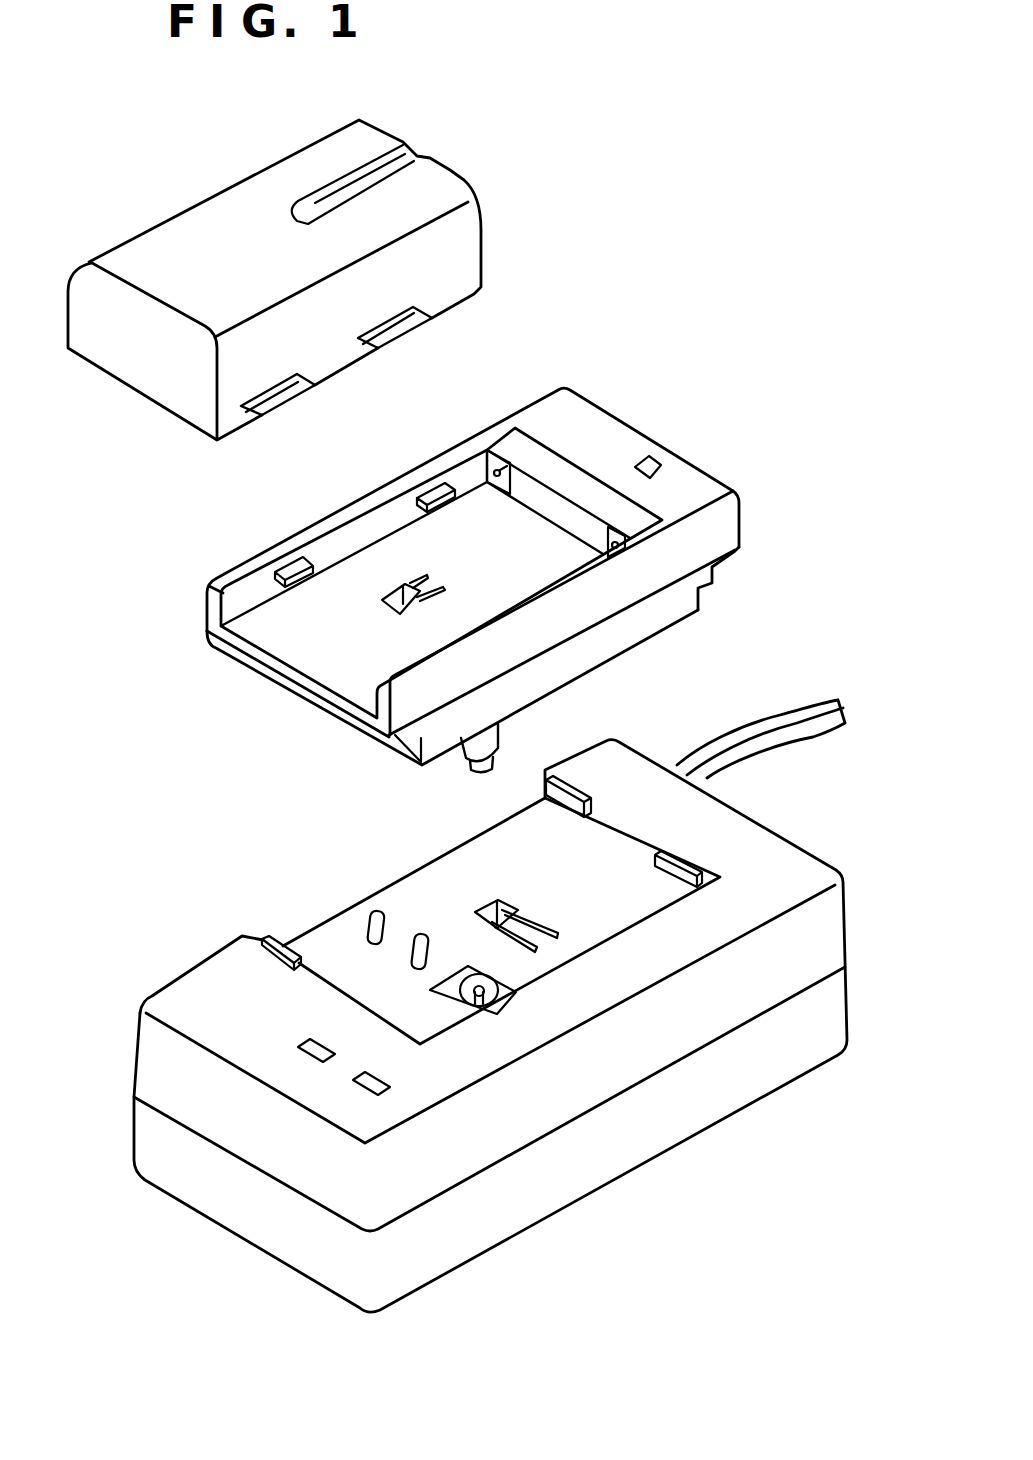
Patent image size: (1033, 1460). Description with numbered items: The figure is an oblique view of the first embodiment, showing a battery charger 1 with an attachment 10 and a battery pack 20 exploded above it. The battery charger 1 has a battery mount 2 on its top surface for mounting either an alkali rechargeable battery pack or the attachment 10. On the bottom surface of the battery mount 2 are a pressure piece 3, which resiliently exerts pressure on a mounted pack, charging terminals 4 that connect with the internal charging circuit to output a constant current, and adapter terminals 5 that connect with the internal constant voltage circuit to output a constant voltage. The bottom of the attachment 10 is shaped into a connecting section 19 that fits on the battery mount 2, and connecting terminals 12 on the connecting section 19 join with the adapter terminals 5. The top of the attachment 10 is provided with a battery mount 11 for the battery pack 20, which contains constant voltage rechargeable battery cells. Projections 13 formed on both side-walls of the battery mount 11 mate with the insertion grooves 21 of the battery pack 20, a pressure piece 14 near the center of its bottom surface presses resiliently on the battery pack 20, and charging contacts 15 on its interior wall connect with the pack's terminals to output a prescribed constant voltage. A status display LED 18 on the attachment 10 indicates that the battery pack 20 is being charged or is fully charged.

The battery charger 1 is at (692, 1142).
The battery mount 2 is at (315, 950).
The pressure piece 3 is at (497, 903).
The charging terminals 4 is at (417, 935).
The adapter terminals 5 is at (467, 978).
The attachment 10 is at (635, 443).
The battery mount 11 is at (280, 633).
The connecting terminals 12 is at (497, 740).
The projections 13 is at (436, 488).
The pressure piece 14 is at (395, 604).
The charging contacts 15 is at (617, 527).
The status display means LED 18 is at (662, 466).
The connecting section 19 is at (665, 638).
The battery pack 20 is at (445, 183).
The insertion grooves 21 is at (410, 322).